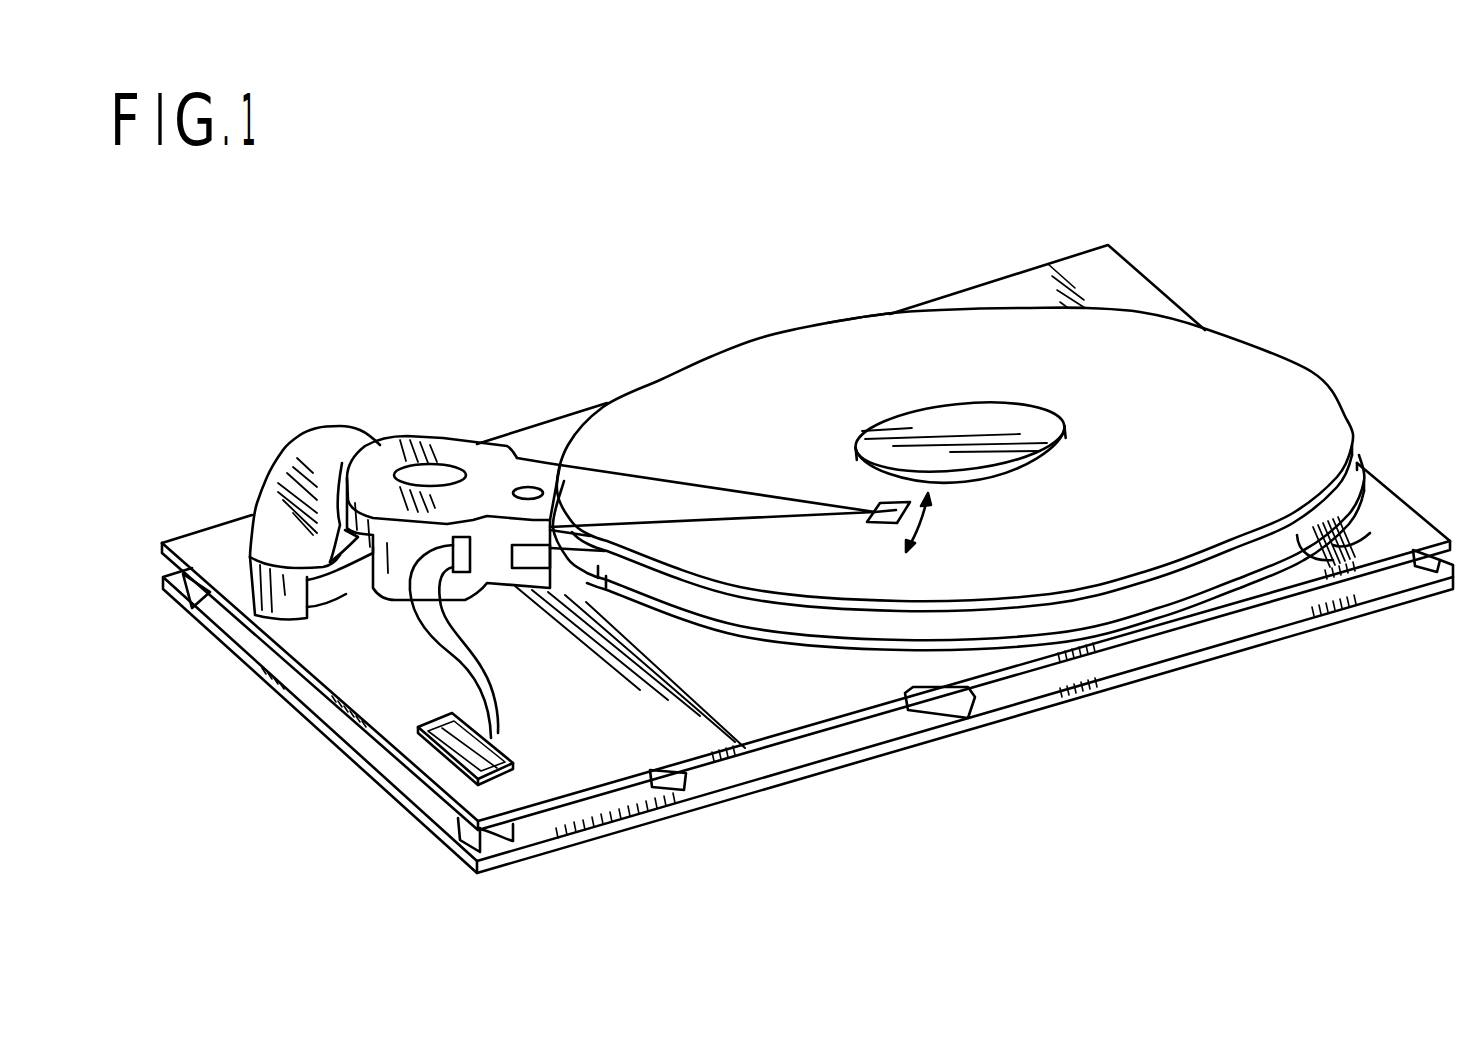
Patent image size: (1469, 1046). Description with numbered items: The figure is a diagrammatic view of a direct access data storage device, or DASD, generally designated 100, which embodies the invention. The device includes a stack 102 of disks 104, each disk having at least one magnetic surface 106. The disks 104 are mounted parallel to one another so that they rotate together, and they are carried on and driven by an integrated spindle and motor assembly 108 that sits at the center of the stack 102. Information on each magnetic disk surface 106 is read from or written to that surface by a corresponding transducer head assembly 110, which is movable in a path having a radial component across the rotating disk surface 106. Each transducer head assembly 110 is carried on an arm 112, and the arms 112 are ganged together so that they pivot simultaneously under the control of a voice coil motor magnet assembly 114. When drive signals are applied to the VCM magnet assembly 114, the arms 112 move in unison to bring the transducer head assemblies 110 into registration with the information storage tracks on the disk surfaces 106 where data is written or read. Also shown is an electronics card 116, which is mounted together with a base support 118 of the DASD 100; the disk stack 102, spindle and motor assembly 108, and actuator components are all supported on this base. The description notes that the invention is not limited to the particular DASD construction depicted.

The direct access storage device 100 is at (1195, 238).
The stack 102 is at (1248, 374).
The disk 104 is at (1318, 528).
The magnetic surface 106 is at (902, 335).
The integrated spindle and motor assembly 108 is at (997, 428).
The transducer head assembly 110 is at (891, 505).
The arm 112 is at (613, 487).
The voice coil motor magnet assembly 114 is at (302, 437).
The electronics card 116 is at (849, 759).
The base support 118 is at (1378, 497).